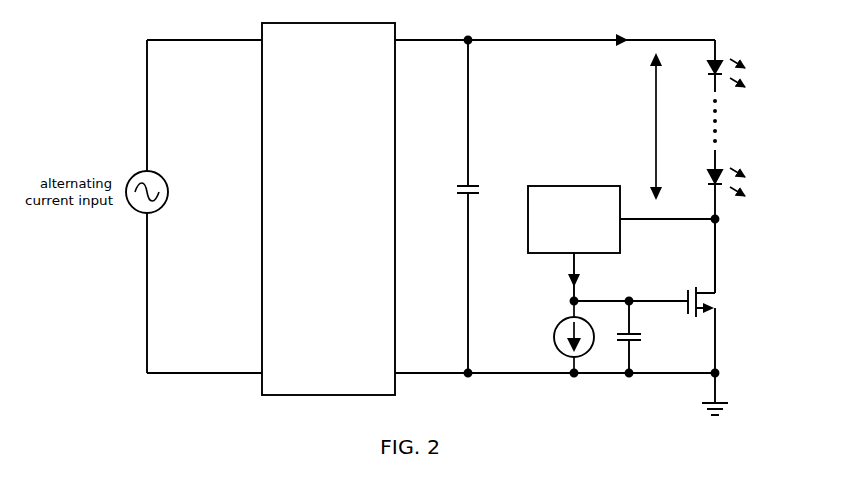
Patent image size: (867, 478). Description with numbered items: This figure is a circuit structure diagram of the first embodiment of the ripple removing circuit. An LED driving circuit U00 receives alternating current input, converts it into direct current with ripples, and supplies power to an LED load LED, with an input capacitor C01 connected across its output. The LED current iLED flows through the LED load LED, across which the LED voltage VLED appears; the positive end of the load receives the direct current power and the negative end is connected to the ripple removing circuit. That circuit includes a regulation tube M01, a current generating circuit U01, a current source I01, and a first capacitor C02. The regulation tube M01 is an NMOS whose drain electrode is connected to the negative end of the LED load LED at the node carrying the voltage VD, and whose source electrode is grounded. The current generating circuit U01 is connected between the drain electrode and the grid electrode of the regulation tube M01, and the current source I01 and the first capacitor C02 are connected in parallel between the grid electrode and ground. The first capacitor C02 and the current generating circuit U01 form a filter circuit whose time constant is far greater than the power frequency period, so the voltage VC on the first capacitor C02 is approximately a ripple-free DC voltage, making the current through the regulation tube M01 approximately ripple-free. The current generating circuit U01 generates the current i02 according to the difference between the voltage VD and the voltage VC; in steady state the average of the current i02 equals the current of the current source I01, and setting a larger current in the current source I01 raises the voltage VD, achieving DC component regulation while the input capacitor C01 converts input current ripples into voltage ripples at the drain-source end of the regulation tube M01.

The LED driving circuit U00 is at (328, 197).
The input capacitor C01 is at (484, 206).
The LED load LED is at (747, 166).
The LED current iLED is at (608, 33).
The LED voltage VLED is at (647, 126).
The voltage VD is at (688, 225).
The current generating circuit U01 is at (574, 208).
The current i02 is at (555, 277).
The voltage VC is at (631, 292).
The current source I01 is at (560, 337).
The first capacitor C02 is at (646, 337).
The regulation tube M01 is at (725, 296).